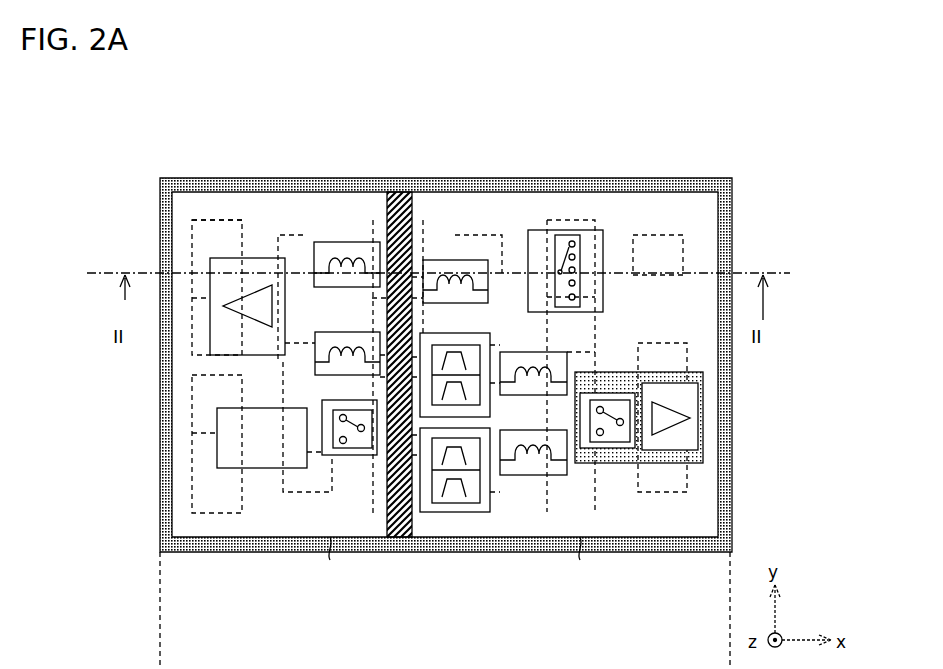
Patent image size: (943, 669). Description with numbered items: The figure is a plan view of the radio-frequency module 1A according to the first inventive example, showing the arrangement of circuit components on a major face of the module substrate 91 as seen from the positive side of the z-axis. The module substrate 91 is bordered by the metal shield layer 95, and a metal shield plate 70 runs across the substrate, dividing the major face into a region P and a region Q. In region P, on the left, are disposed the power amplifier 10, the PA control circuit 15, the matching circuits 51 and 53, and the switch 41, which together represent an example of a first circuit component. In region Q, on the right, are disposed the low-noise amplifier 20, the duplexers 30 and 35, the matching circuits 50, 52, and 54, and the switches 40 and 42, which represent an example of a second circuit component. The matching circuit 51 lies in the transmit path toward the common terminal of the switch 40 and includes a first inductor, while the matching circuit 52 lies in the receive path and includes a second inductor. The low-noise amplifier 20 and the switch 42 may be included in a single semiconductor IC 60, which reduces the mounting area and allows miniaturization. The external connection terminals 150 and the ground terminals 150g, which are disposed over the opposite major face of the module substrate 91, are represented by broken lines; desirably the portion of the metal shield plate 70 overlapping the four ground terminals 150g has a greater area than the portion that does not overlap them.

The radio-frequency module 1A is at (735, 83).
The power amplifier 10 is at (262, 258).
The PA control circuit 15 is at (260, 468).
The low-noise amplifier 20 is at (668, 450).
The duplexer 30 is at (452, 333).
The duplexer 35 is at (490, 505).
The switch 40 is at (585, 232).
The switch 41 is at (340, 455).
The switch 42 is at (615, 448).
The matching circuit 50 is at (438, 260).
The matching circuit 51 is at (340, 242).
The matching circuit 52 is at (518, 352).
The matching circuit 53 is at (340, 332).
The matching circuit 54 is at (518, 430).
The semiconductor IC 60 is at (630, 372).
The metal shield plate 70 is at (408, 218).
The module substrate 91 is at (708, 217).
The metal shield layer 95 is at (726, 380).
The external connection terminals 150 is at (633, 235).
The ground terminals 150g is at (565, 515).